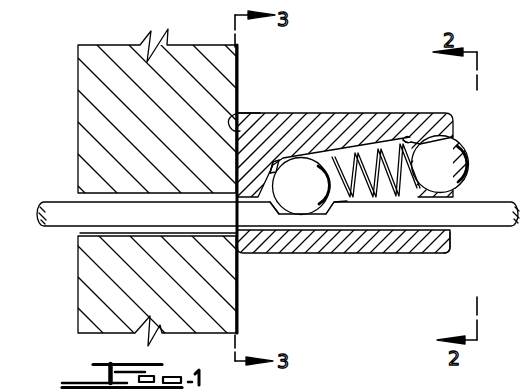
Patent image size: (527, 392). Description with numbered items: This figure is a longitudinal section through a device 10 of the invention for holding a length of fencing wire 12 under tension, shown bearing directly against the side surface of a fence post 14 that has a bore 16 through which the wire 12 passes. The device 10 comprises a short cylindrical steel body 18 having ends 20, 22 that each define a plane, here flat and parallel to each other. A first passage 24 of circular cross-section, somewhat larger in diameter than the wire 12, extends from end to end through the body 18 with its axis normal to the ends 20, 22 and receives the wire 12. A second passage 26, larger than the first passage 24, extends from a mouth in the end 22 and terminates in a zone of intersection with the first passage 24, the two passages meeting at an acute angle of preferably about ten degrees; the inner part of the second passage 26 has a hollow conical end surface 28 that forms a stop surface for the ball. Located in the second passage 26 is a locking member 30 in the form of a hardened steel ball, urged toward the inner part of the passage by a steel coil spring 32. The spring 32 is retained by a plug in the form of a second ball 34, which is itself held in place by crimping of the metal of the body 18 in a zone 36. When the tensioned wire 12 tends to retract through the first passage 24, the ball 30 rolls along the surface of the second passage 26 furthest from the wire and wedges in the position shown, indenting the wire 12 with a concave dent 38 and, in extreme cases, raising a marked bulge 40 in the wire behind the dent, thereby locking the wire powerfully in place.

The device 10 is at (263, 196).
The fencing wire 12 is at (499, 233).
The fence post 14 is at (78, 136).
The bore 16 is at (80, 234).
The cylindrical steel body 18 is at (392, 117).
The end 20 is at (239, 111).
The end 22 is at (451, 245).
The first passage 24 is at (386, 227).
The second passage 26 is at (412, 134).
The hollow conical end surface 28 is at (276, 163).
The locking member 30 is at (303, 202).
The coil spring 32 is at (353, 152).
The second ball 34 is at (465, 164).
The zone 36 is at (433, 135).
The concave dent 38 is at (277, 208).
The bulge 40 is at (337, 203).